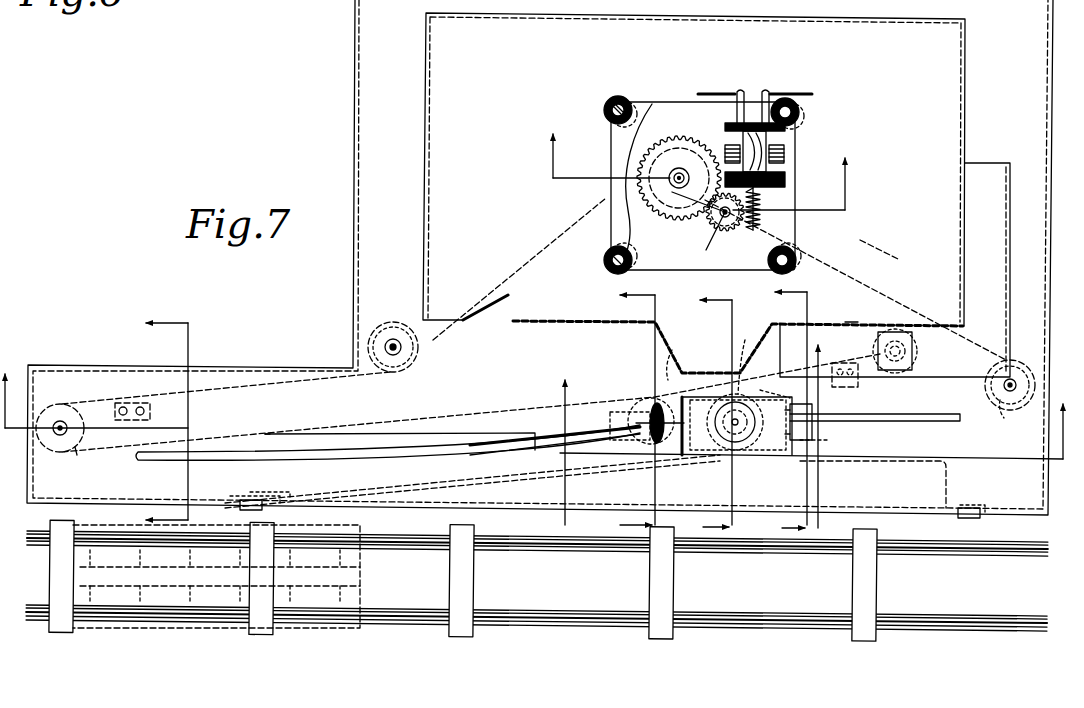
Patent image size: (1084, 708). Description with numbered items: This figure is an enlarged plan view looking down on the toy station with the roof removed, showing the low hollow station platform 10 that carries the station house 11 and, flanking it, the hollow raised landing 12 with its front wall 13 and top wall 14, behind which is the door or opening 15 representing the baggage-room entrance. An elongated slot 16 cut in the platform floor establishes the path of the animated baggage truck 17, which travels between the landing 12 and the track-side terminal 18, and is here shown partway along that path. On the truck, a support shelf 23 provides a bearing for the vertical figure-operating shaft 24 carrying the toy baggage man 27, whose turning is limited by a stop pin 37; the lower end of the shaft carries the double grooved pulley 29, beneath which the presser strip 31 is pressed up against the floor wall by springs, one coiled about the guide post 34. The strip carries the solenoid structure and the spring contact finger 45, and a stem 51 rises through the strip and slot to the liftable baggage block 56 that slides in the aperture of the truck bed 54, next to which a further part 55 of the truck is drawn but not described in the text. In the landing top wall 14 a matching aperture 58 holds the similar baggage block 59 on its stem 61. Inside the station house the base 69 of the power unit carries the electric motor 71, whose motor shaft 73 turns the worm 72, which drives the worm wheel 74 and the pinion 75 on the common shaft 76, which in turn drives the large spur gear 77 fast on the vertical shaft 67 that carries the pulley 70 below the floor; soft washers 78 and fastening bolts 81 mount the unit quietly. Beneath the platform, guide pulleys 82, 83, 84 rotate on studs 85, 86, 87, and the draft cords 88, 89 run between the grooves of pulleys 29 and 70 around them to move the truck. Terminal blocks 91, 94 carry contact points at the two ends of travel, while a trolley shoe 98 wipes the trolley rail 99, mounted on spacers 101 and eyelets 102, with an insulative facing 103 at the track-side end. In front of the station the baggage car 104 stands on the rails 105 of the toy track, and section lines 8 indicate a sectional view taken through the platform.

The section line 8- 8 is at (532, 404).
The station platform 10 is at (353, 330).
The station house 11 is at (963, 298).
The raised landing structure 12 is at (1020, 330).
The front wall 13 is at (978, 374).
The top wall 14 is at (825, 312).
The door or opening 15 is at (858, 322).
The elongated slot 16 is at (938, 422).
The baggage truck 17 is at (702, 464).
The track-side terminal location 18 is at (240, 462).
The support shelf 23 is at (650, 406).
The figure-operating shaft 24 is at (648, 398).
The toy figure 27 is at (612, 448).
The double grooved pulley 29 is at (628, 410).
The presser strip 31 is at (814, 430).
The guide post 34 is at (767, 383).
The horizontal stop pin 37 is at (622, 442).
The spring contact finger 45 is at (676, 352).
The vertical stem 51 is at (748, 357).
The bed 54 is at (704, 396).
The drum 55 is at (752, 442).
The liftable hollow block 56 is at (730, 392).
The aperture 58 is at (912, 336).
The hollow block 59 is at (912, 364).
The vertical stem 61 is at (915, 352).
The vertical shaft 67 is at (677, 182).
The base 69 is at (672, 105).
The pulley 70 is at (678, 216).
The electric motor 71 is at (790, 146).
The worm 72 is at (760, 222).
The motor shaft 73 is at (770, 192).
The worm wheel 74 is at (733, 226).
The pinion 75 is at (724, 228).
The shaft 76 is at (706, 250).
The large spur gear 77 is at (700, 142).
The washers 78 is at (605, 102).
The fastening bolts 81 is at (612, 120).
The guide pulley 82 is at (1004, 420).
The guide pulley 83 is at (390, 322).
The guide pulley 84 is at (76, 452).
The stud 85 is at (1012, 392).
The stud 86 is at (394, 339).
The stud 87 is at (60, 428).
The draft cord 88 is at (548, 249).
The draft cord 89 is at (878, 270).
The terminal block 91 is at (150, 412).
The terminal block 94 is at (858, 380).
The trolley shoe 98 is at (836, 440).
The trolley rail 99 is at (410, 498).
The non-conductive spacers 101 is at (283, 503).
The insulated fastening eyelets 102 is at (248, 506).
The facing 103 is at (268, 492).
The baggage car 104 is at (362, 600).
The rails 105 is at (570, 548).